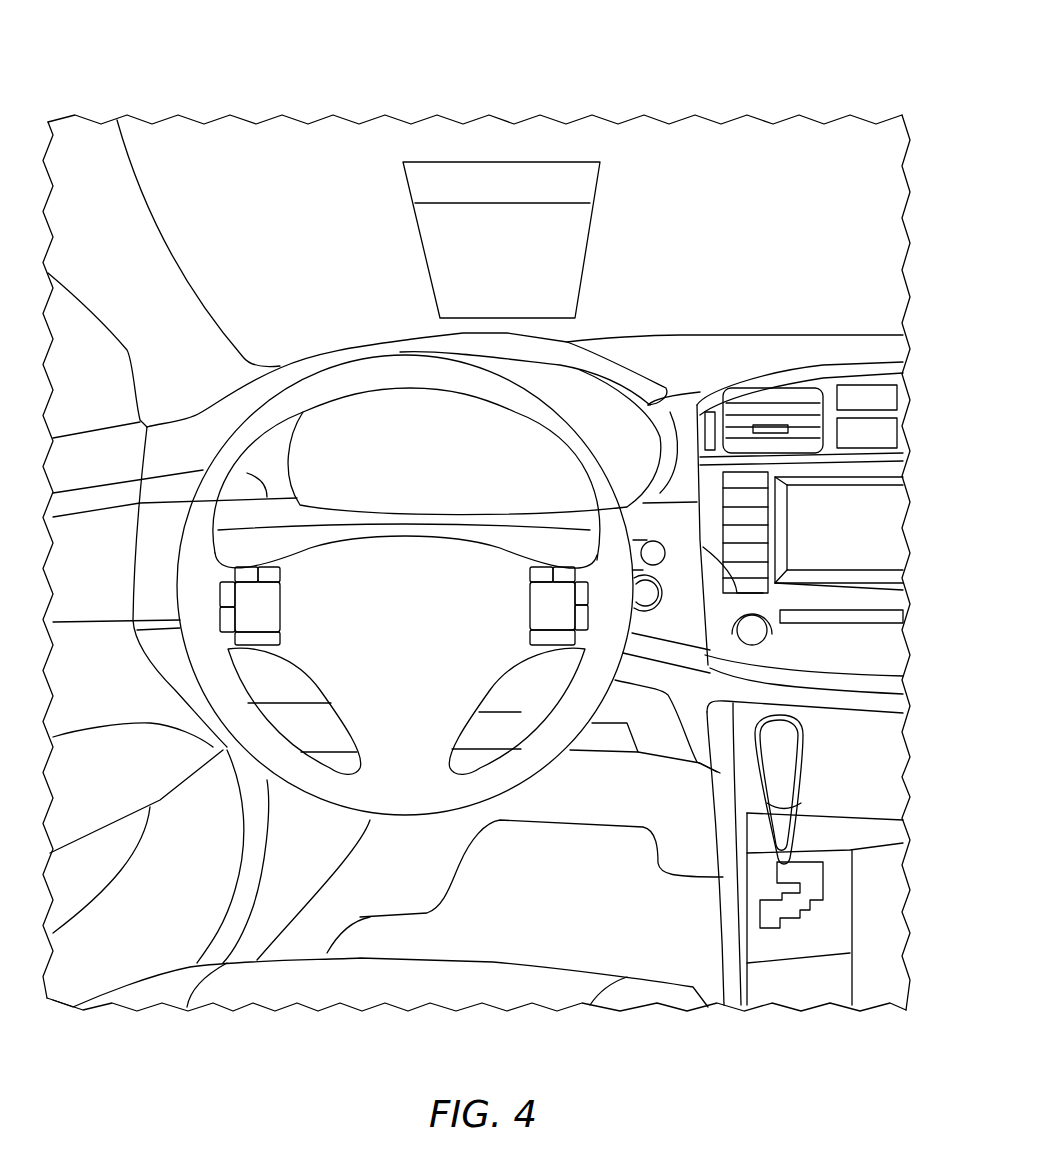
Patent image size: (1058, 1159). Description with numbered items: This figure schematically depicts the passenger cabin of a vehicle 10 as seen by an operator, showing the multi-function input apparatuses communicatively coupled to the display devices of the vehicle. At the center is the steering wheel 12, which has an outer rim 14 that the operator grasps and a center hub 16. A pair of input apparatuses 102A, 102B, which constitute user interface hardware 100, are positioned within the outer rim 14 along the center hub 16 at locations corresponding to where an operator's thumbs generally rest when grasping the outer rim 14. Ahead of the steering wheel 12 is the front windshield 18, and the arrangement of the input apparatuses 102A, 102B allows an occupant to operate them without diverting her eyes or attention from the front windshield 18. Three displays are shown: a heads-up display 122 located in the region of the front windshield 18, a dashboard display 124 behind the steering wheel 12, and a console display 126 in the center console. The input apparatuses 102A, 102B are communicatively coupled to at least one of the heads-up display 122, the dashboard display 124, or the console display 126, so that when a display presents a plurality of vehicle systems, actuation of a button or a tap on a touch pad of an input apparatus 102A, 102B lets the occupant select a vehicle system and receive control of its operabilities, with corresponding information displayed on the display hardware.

The vehicle 10 is at (476, 507).
The steering wheel 12 is at (405, 551).
The outer rim 14 is at (397, 366).
The center hub 16 is at (394, 622).
The front windshield 18 is at (480, 182).
The user interface hardware 100 is at (406, 711).
The input apparatus 102A is at (299, 622).
The input apparatus 102B is at (508, 622).
The heads-up display 122 is at (433, 217).
The dashboard display 124 is at (482, 442).
The console display 126 is at (864, 533).